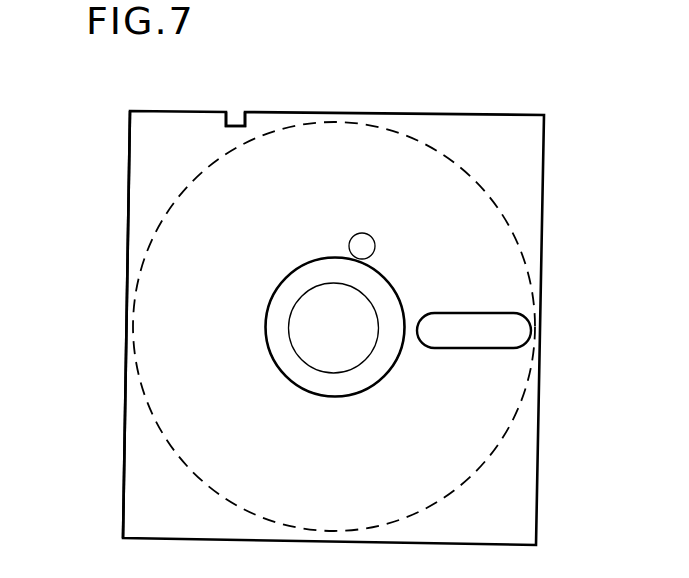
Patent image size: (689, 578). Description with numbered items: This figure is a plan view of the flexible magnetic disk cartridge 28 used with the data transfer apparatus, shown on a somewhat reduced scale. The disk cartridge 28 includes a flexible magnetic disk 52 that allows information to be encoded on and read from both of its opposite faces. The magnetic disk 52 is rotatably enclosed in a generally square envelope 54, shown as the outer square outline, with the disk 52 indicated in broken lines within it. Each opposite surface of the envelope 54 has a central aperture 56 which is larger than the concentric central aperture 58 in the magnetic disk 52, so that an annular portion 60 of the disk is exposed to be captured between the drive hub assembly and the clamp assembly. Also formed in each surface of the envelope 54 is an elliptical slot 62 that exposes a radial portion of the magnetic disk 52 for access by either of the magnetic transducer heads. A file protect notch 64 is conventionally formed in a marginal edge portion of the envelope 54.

The disk cartridge 28 is at (547, 111).
The flexible magnetic disk 52 is at (182, 197).
The envelope 54 is at (129, 170).
The central aperture 56 is at (274, 301).
The central aperture 58 is at (294, 341).
The annular portion 60 is at (303, 278).
The slot 62 is at (489, 341).
The file protect notch 64 is at (229, 112).